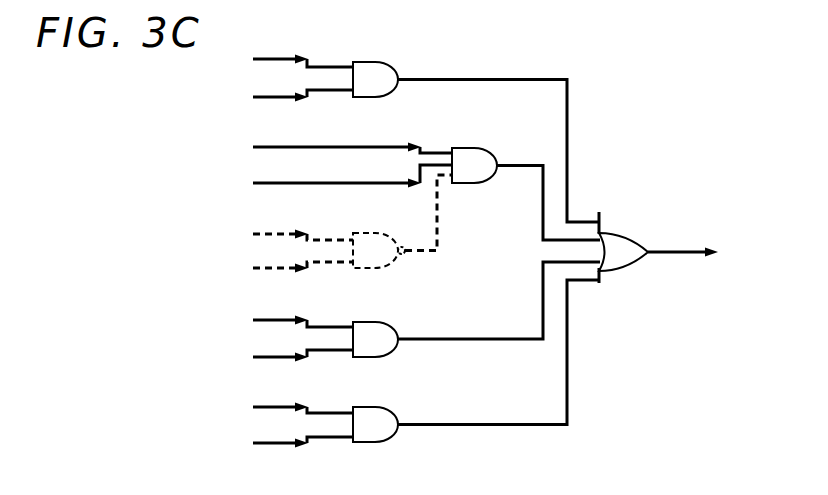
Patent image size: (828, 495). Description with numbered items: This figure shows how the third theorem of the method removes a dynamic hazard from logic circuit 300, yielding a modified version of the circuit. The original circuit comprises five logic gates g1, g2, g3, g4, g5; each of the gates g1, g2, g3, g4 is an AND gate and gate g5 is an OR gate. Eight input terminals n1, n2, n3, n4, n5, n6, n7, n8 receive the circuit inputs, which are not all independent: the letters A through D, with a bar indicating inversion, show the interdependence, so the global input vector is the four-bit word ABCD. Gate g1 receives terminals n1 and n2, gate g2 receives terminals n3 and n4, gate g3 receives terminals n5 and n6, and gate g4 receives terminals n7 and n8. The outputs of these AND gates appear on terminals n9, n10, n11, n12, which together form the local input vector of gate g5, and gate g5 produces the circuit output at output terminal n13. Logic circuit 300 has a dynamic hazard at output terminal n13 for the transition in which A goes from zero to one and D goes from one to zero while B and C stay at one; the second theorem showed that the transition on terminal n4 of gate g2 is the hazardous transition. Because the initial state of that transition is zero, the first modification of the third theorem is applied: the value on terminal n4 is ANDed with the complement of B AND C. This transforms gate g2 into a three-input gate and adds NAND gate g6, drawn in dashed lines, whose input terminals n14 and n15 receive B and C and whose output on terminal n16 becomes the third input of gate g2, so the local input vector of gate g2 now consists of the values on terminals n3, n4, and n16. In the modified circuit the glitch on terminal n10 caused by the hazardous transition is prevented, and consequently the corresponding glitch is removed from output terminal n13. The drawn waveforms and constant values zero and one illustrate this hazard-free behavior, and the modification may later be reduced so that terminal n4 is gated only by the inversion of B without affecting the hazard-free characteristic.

The logic circuit 300 is at (138, 88).
The AND gate g1 is at (375, 79).
The AND gate g2 is at (474, 165).
The AND gate g3 is at (375, 339).
The AND gate g4 is at (375, 424).
The OR gate g5 is at (623, 252).
The NAND gate g6 is at (379, 250).
The input terminal n1 is at (238, 45).
The input terminal n2 is at (238, 83).
The input terminal n3 is at (238, 134).
The input terminal n4 is at (238, 171).
The input terminal n5 is at (295, 314).
The input terminal n6 is at (295, 354).
The input terminal n7 is at (238, 391).
The input terminal n8 is at (295, 438).
The terminal n9 is at (498, 142).
The terminal n10 is at (548, 190).
The terminal n11 is at (499, 314).
The terminal n12 is at (498, 360).
The output terminal n13 is at (683, 254).
The input terminal n14 is at (295, 226).
The input terminal n15 is at (295, 268).
The terminal n16 is at (428, 228).